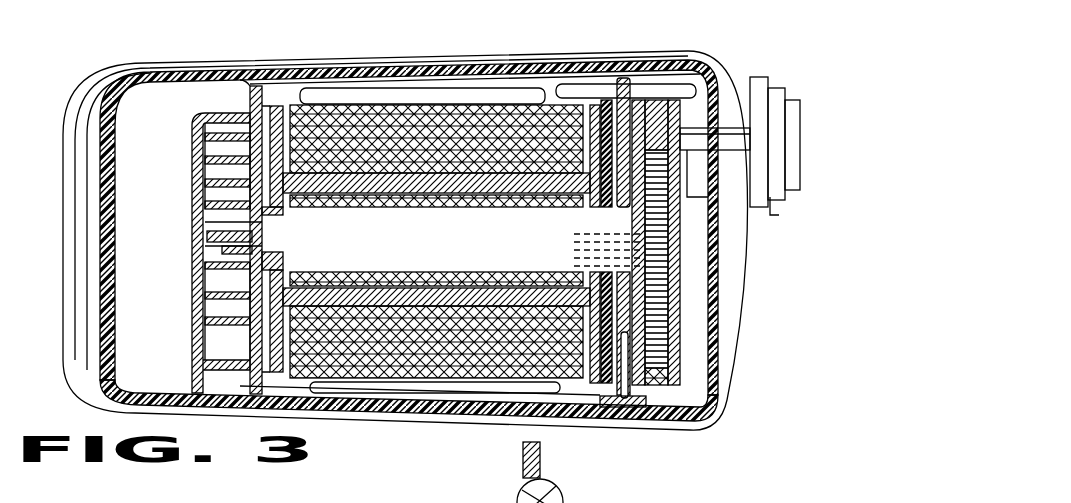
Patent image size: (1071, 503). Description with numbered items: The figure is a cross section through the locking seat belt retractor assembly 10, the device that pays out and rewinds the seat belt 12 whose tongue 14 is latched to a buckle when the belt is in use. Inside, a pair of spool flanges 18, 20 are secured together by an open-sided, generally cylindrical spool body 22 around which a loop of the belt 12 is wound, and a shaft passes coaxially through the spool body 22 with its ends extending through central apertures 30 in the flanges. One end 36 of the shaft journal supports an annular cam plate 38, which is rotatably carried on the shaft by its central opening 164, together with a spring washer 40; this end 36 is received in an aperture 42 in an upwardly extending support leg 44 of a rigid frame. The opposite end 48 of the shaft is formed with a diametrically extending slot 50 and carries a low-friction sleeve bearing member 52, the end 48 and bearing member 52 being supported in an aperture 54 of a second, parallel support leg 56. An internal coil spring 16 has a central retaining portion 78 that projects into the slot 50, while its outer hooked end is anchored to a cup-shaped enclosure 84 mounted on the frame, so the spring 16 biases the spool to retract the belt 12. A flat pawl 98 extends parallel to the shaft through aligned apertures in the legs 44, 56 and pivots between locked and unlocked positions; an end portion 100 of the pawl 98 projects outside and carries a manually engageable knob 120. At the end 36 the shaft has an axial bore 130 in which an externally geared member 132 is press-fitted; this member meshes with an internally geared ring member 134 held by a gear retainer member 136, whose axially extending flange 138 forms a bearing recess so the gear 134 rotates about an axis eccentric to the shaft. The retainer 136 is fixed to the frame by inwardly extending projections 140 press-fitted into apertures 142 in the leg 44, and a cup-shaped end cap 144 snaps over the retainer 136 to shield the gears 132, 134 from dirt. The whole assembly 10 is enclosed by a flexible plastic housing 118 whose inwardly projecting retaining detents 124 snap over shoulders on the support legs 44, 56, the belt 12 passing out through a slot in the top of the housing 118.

The locking seat belt retractor assembly 10 is at (150, 58).
The seat belt 12 is at (411, 104).
The tongue 14 is at (522, 456).
The coil spring 16 is at (194, 118).
The spool flange 18 is at (597, 108).
The spool flange 20 is at (279, 108).
The spool body 22 is at (466, 182).
The central apertures 30 is at (263, 221).
The shaft end 36 is at (587, 208).
The cam plate 38 is at (607, 385).
The spring washer 40 is at (597, 312).
The aperture 42 is at (607, 277).
The support leg 44 is at (653, 100).
The shaft end 48 is at (212, 217).
The slot 50 is at (218, 238).
The sleeve bearing member 52 is at (270, 258).
The aperture 54 is at (268, 251).
The support leg 56 is at (265, 82).
The retaining portion 78 is at (270, 227).
The spring enclosure 84 is at (188, 344).
The pawl 98 is at (696, 127).
The pawl end portion 100 is at (745, 147).
The housing 118 is at (712, 416).
The knob 120 is at (685, 245).
The retaining detents 124 is at (243, 74).
The bore 130 is at (540, 247).
The externally geared member 132 is at (717, 268).
The internal gear member 134 is at (686, 310).
The gear retainer member 136 is at (718, 58).
The flange 138 is at (686, 250).
The projections 140 is at (618, 358).
The apertures 142 is at (627, 400).
The end cap 144 is at (690, 350).
The central opening 164 is at (596, 205).